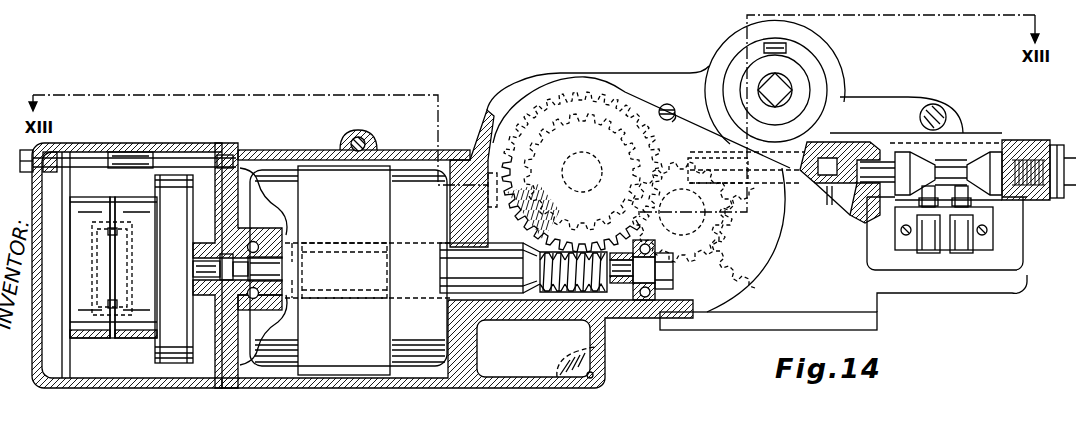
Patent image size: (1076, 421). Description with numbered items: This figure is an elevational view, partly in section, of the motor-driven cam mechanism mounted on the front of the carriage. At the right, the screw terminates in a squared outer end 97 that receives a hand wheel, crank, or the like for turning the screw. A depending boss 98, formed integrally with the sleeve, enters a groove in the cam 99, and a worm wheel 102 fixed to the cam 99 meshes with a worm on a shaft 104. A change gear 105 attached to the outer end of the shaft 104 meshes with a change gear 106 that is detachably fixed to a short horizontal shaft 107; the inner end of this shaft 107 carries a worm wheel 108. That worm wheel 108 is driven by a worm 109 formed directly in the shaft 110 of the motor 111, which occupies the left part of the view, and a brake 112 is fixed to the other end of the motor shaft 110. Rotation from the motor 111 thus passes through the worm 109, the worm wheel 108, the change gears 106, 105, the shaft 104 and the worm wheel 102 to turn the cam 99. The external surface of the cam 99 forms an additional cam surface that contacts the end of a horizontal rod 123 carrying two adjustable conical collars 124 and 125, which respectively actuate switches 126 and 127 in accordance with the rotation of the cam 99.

The squared outer end of the screw 97 is at (790, 96).
The depending boss 98 is at (790, 168).
The cam 99 is at (847, 160).
The worm wheel 102 is at (852, 212).
The shaft 104 is at (718, 232).
The change gear 105 is at (726, 270).
The change gear 106 is at (582, 172).
The short horizontal shaft 107 is at (594, 157).
The worm wheel 108 is at (522, 215).
The worm 109 is at (603, 288).
The motor shaft 110 is at (503, 278).
The motor 111 is at (288, 165).
The brake 112 is at (132, 208).
The horizontal rod 123 is at (957, 163).
The adjustable conical collar 124 is at (903, 157).
The adjustable conical collar 125 is at (996, 153).
The switch 126 is at (917, 255).
The switch 127 is at (965, 255).